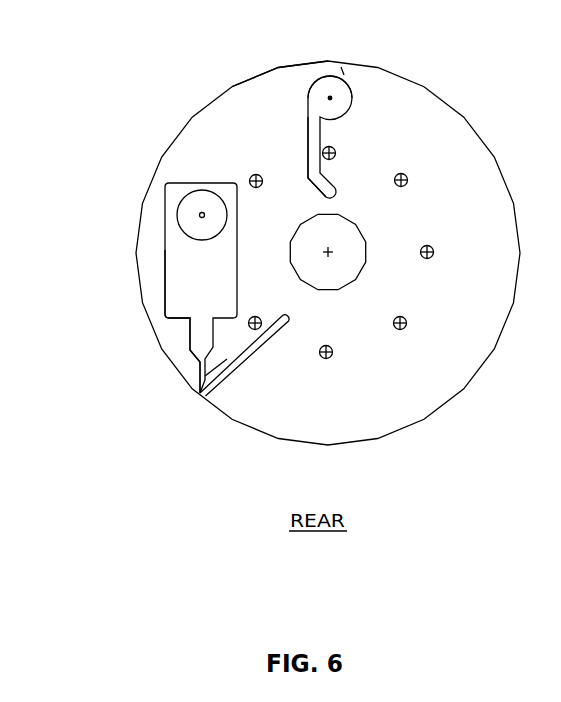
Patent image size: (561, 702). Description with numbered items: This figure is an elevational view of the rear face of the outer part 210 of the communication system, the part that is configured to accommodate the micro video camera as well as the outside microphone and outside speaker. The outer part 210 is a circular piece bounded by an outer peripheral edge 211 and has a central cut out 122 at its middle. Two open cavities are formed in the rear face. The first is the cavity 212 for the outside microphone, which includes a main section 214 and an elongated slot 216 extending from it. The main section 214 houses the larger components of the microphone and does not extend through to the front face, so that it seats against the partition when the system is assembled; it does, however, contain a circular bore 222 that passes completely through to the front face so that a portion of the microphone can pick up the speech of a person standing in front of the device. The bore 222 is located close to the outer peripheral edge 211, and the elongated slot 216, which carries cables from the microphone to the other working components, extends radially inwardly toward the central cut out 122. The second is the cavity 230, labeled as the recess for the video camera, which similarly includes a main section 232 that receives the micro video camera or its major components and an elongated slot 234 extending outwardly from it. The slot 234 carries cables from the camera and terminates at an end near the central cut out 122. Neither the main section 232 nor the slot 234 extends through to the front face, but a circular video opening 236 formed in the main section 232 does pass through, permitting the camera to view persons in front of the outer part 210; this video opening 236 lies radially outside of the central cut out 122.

The outer part 210 is at (390, 88).
The outer peripheral edge 211 is at (230, 87).
The cavity 212 is at (343, 83).
The main section 214 is at (331, 82).
The elongated slot 216 is at (312, 127).
The bore 222 is at (330, 97).
The central cut out 122 is at (348, 265).
The cavity 230 is at (166, 178).
The main section 232 is at (173, 250).
The elongated slot 234 is at (201, 393).
The video opening 236 is at (200, 214).